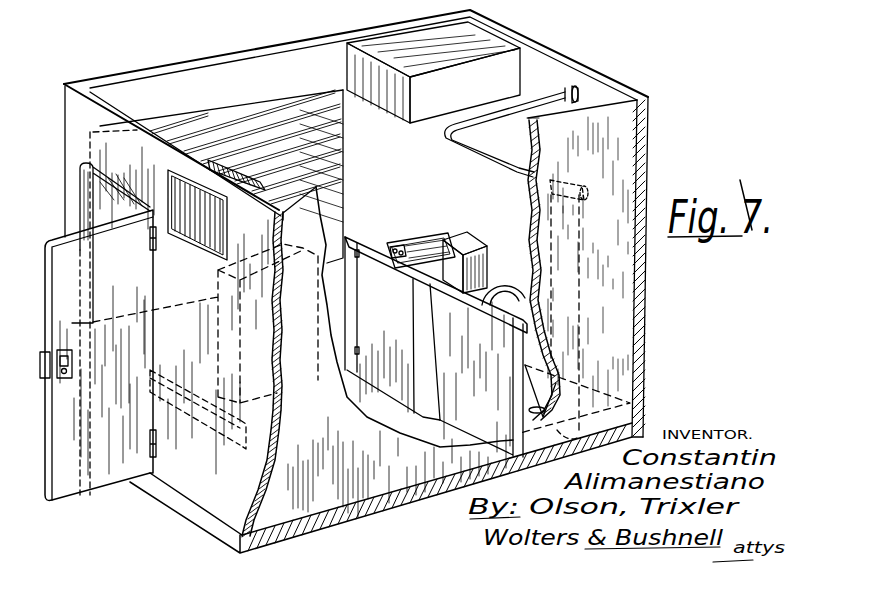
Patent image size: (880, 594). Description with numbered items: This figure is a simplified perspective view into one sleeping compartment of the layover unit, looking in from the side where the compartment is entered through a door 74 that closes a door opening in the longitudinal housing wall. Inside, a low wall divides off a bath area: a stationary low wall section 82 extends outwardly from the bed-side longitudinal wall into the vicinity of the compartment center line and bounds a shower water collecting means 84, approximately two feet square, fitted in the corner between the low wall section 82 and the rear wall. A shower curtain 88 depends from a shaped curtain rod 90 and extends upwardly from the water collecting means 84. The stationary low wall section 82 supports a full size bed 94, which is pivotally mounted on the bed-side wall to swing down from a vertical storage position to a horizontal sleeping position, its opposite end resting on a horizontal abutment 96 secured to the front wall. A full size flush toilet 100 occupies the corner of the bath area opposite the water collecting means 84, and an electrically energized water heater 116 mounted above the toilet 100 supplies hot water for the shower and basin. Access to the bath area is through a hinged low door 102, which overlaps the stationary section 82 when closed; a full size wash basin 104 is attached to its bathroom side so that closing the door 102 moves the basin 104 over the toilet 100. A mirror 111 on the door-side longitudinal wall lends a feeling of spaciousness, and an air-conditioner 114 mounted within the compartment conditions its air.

The door 74 is at (102, 480).
The stationary low wall section 82 is at (487, 378).
The shower water collecting means 84 is at (625, 395).
The shower curtain 88 is at (570, 230).
The curtain rod 90 is at (455, 147).
The bed 94 is at (218, 331).
The horizontal abutment 96 is at (212, 420).
The flush toilet 100 is at (478, 267).
The low door 102 is at (400, 316).
The wash basin 104 is at (418, 233).
The mirror 111 is at (272, 103).
The air-conditioner 114 is at (248, 182).
The water heater 116 is at (500, 68).